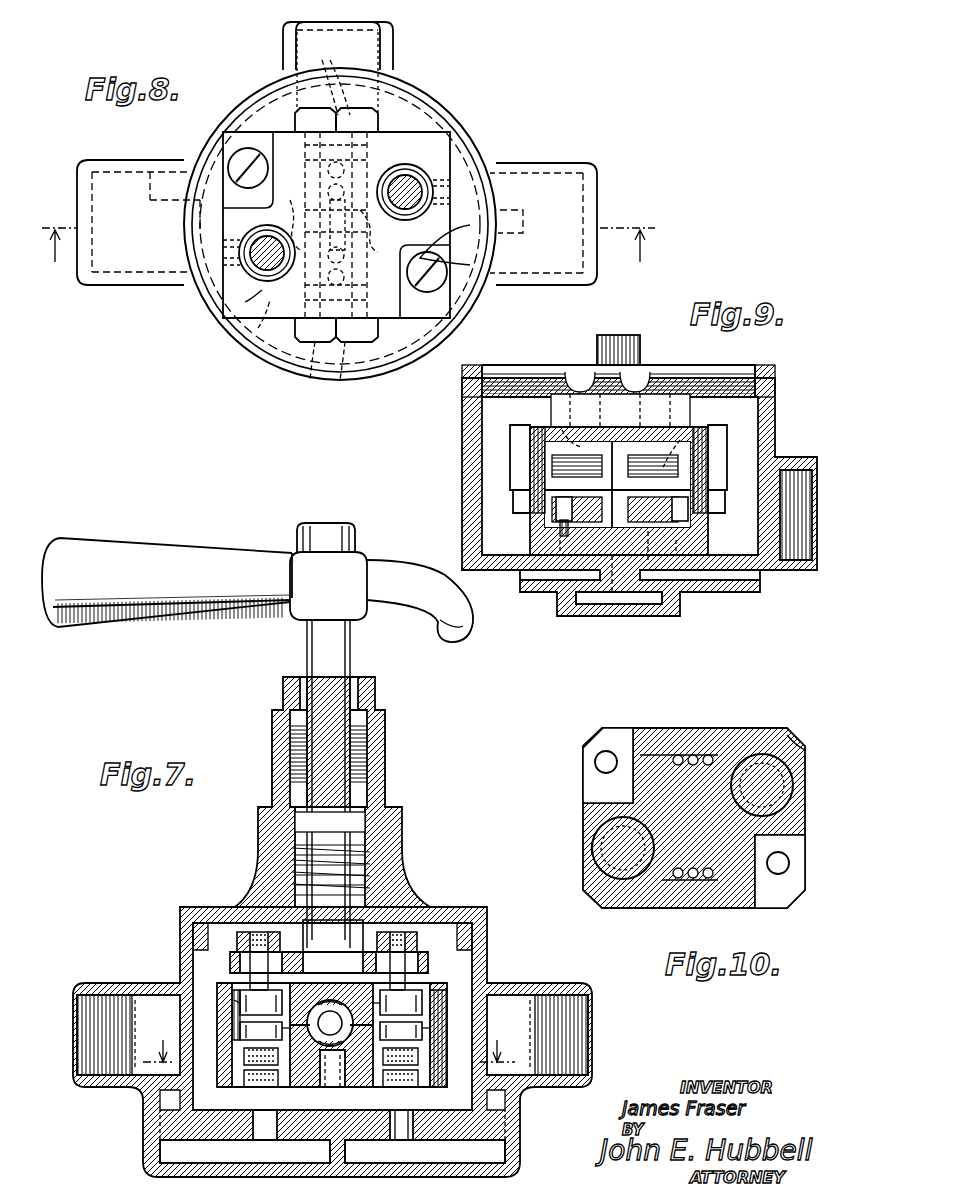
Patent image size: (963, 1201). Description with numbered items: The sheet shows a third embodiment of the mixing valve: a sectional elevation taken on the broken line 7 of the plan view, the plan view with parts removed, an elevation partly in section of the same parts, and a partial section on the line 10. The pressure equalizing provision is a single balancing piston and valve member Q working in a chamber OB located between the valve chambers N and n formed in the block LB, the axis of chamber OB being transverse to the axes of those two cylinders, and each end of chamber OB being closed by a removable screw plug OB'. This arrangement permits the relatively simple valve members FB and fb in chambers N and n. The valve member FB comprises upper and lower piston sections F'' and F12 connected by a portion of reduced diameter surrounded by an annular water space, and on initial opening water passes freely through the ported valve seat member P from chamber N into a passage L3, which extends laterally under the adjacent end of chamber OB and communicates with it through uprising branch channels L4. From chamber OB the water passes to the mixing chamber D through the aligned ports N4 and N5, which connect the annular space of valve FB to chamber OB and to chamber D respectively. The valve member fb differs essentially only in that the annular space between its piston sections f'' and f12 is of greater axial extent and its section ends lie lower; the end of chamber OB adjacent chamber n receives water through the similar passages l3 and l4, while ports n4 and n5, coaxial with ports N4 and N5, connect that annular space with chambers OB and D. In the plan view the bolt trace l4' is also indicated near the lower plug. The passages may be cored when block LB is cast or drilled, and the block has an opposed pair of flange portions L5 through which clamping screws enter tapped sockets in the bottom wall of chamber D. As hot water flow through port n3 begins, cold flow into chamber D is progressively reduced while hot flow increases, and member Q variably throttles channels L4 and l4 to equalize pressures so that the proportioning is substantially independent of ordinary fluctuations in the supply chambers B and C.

In FIG. 8, the section line 7 is at (348, 229).
In FIG. 7, the section line 10 is at (329, 1062).
In FIG. 8, the mixing chamber D is at (353, 360).
In FIG. 9, the mixing chamber D is at (755, 395).
In FIG. 7, the mixing chamber D is at (445, 907).
In FIG. 7, the supply chamber B is at (510, 1128).
In FIG. 9, the supply chamber C is at (580, 605).
In FIG. 7, the supply chamber C is at (165, 1140).
In FIG. 7, the ported valve seat member P is at (440, 1135).
In FIG. 8, the valve member FB is at (470, 265).
In FIG. 10, the valve member FB is at (787, 735).
In FIG. 7, the valve member FB is at (425, 945).
In FIG. 8, the block LB is at (400, 195).
In FIG. 9, the block LB is at (708, 540).
In FIG. 10, the block LB is at (695, 728).
In FIG. 7, the block LB is at (227, 980).
In FIG. 9, the passage L3 is at (700, 520).
In FIG. 10, the passage L3 is at (708, 757).
In FIG. 7, the passage L3 is at (380, 1115).
In FIG. 8, the branch channels L4 is at (331, 76).
In FIG. 9, the branch channels L4 is at (700, 508).
In FIG. 10, the branch channels L4 is at (693, 757).
In FIG. 7, the branch channels L4 is at (262, 1120).
In FIG. 8, the flange portions L5 is at (243, 152).
In FIG. 10, the flange portions L5 is at (586, 758).
In FIG. 9, the passage l3 is at (530, 540).
In FIG. 9, the branch channels l4 is at (499, 503).
In FIG. 8, the bolt trace l4' is at (326, 372).
In FIG. 8, the valve chamber N is at (412, 170).
In FIG. 10, the valve chamber N is at (760, 755).
In FIG. 7, the valve chamber N is at (420, 992).
In FIG. 8, the port N4 is at (381, 233).
In FIG. 7, the port N4 is at (393, 1005).
In FIG. 8, the port N5 is at (433, 180).
In FIG. 7, the port N5 is at (444, 1013).
In FIG. 8, the valve chamber n is at (245, 278).
In FIG. 9, the valve chamber n is at (616, 595).
In FIG. 10, the valve chamber n is at (592, 850).
In FIG. 7, the valve chamber n is at (237, 975).
In FIG. 8, the port n3 is at (290, 214).
In FIG. 9, the port n3 is at (562, 430).
In FIG. 8, the port n4 is at (240, 246).
In FIG. 7, the port n4 is at (254, 1005).
In FIG. 7, the port n5 is at (270, 1029).
In FIG. 8, the chamber OB is at (390, 195).
In FIG. 9, the chamber OB is at (672, 585).
In FIG. 7, the chamber OB is at (478, 1038).
In FIG. 8, the removable screw plug OB' is at (350, 225).
In FIG. 9, the removable screw plug OB' is at (619, 455).
In FIG. 8, the balancing piston and valve member Q is at (258, 328).
In FIG. 9, the balancing piston and valve member Q is at (680, 440).
In FIG. 7, the balancing piston and valve member Q is at (355, 1010).
In FIG. 8, the valve member fb is at (262, 290).
In FIG. 9, the valve member fb is at (530, 523).
In FIG. 10, the valve member fb is at (590, 838).
In FIG. 7, the valve member fb is at (237, 1000).
In FIG. 7, the upper piston section f'' is at (178, 1035).
In FIG. 7, the lower piston section f12 is at (195, 1080).
In FIG. 7, the upper piston section F'' is at (506, 1013).
In FIG. 7, the lower piston section F12 is at (470, 1075).